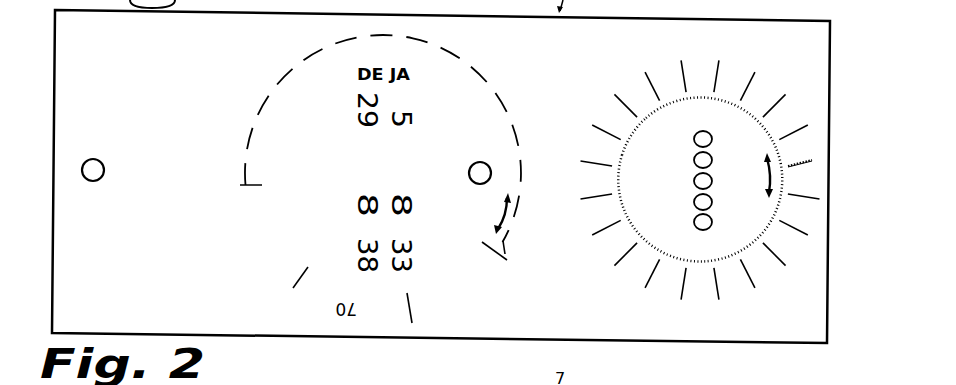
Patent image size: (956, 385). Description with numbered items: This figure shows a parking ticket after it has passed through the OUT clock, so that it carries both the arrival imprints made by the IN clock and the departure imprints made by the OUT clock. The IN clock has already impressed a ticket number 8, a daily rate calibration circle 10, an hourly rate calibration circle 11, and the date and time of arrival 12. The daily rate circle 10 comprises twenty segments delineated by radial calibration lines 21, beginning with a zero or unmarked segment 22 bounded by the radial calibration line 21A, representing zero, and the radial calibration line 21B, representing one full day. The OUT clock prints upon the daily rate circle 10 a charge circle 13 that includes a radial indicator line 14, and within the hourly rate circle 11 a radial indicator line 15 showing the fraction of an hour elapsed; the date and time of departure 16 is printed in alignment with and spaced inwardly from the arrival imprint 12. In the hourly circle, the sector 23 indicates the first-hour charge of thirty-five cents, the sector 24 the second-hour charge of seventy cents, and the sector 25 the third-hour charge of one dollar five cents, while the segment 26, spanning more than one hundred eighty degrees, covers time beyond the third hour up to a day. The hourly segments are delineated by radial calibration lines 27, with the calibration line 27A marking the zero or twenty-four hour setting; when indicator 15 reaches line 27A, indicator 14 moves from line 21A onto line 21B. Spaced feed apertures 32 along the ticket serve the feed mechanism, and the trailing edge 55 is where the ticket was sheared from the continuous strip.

The ticket number 8 is at (683, 180).
The daily rate calibration circle 10 is at (725, 167).
The hourly rate calibration circle 11 is at (496, 55).
The date and time of arrival 12 is at (361, 177).
The charge circle 13 is at (700, 179).
The radial indicator line 14 is at (818, 166).
The radial indicator line 15 is at (507, 250).
The date and time of departure 16 is at (405, 177).
The radial calibration lines 21 is at (699, 180).
The radial calibration line 21A is at (607, 93).
The radial calibration line 21B is at (647, 70).
The unmarked segment 22 is at (657, 128).
The sector 23 is at (483, 277).
The sector 24 is at (383, 318).
The sector 25 is at (272, 263).
The segment 26 is at (458, 68).
The radial calibration lines 27 is at (310, 272).
The calibration line 27A is at (507, 260).
The feed apertures 32 is at (104, 170).
The trailing edge 55 is at (828, 220).